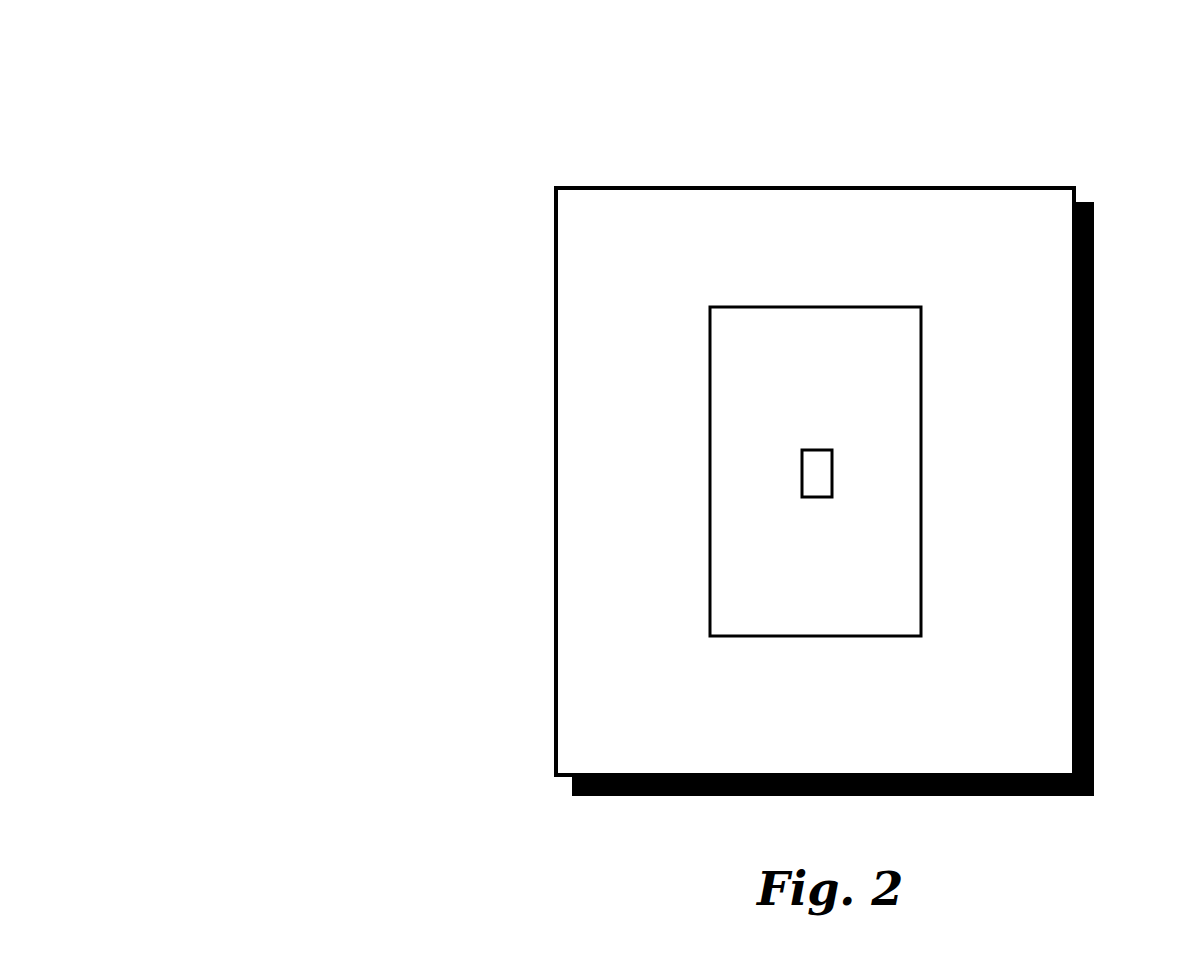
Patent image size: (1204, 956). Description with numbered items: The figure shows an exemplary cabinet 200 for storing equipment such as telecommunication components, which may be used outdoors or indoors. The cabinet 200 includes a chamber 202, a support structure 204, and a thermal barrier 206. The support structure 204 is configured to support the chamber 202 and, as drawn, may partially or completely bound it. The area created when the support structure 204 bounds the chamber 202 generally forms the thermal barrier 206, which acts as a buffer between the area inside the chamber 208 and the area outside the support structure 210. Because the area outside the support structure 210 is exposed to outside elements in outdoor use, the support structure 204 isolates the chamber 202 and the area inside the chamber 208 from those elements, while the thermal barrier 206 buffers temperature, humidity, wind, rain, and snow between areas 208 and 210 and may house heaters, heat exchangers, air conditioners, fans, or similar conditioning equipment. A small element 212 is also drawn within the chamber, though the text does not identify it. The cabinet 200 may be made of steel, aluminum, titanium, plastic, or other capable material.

The cabinet 200 is at (258, 64).
The chamber 202 is at (709, 449).
The support structure 204 is at (554, 362).
The thermal barrier 206 is at (765, 238).
The area inside the chamber 208 is at (850, 412).
The area outside the support structure 210 is at (433, 240).
The cursor / small element 212 is at (797, 497).